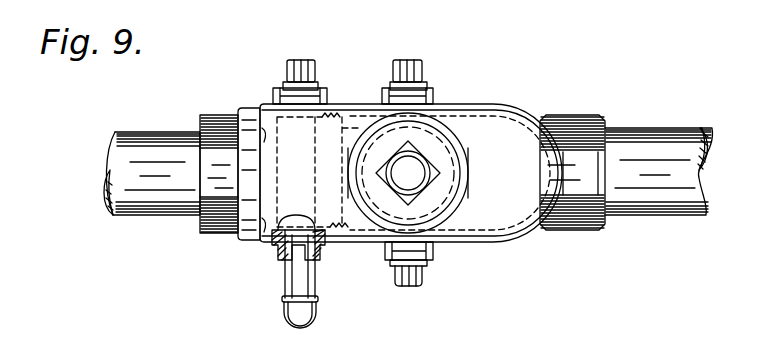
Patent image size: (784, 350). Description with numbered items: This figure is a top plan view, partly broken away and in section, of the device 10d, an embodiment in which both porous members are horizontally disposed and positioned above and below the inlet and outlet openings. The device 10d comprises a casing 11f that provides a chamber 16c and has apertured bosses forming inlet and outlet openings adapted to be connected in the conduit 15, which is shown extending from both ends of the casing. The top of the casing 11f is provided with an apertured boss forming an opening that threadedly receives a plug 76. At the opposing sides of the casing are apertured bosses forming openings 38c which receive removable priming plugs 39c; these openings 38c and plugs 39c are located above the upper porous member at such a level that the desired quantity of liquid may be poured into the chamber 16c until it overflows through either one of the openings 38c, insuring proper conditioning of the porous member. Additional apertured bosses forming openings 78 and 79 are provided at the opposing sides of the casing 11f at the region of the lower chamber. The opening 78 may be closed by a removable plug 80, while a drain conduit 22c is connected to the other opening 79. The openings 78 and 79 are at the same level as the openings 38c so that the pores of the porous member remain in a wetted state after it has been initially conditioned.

The device 10d is at (494, 78).
The conduit 15 is at (154, 216).
The casing 11f is at (482, 245).
The chamber 16c is at (533, 233).
The plug 76 is at (437, 168).
The removable plug 80 is at (288, 82).
The opening 78 is at (291, 95).
The removable priming plug 39c is at (395, 90).
The opening 38c is at (430, 93).
The opening 79 is at (285, 268).
The drain conduit 22c is at (284, 288).